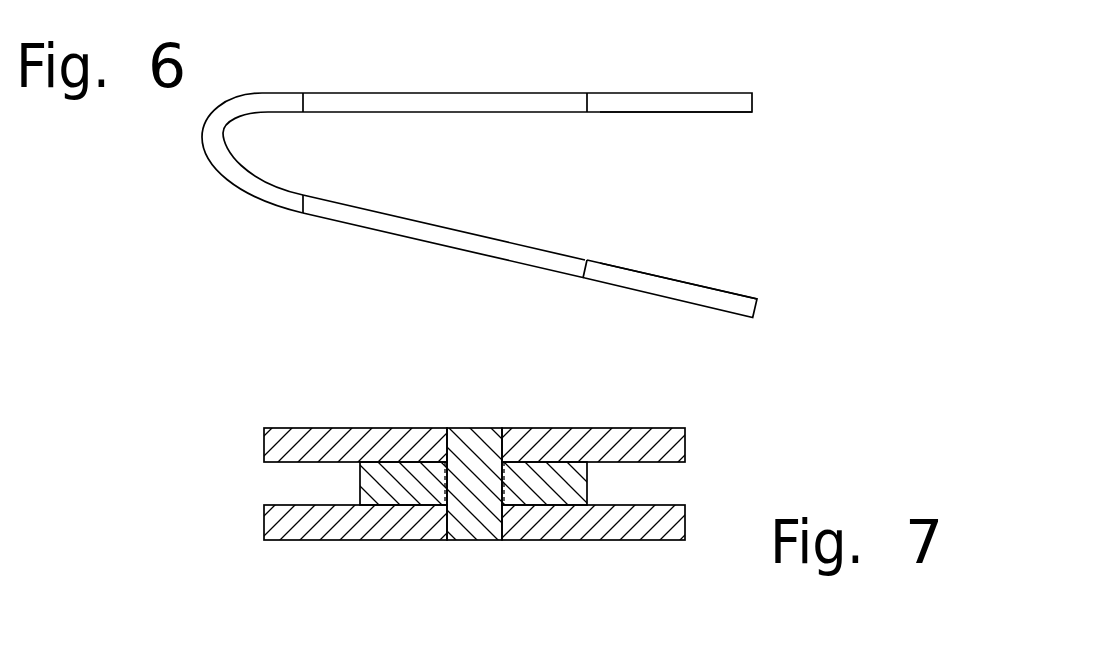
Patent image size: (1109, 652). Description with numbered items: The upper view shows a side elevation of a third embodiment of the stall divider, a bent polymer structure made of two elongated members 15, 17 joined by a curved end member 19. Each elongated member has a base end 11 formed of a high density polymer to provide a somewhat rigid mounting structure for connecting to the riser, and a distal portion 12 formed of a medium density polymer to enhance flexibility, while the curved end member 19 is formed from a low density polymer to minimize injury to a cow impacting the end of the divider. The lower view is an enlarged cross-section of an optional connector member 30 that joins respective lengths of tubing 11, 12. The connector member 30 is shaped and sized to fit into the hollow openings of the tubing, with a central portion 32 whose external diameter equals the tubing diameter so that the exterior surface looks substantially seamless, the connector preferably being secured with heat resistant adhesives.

In FIG. 6, the base end 11 is at (656, 93).
In FIG. 7, the base end 11 is at (555, 540).
In FIG. 6, the distal portion 12 is at (430, 93).
In FIG. 7, the distal portion 12 is at (372, 428).
In FIG. 6, the elongated member 15 is at (637, 113).
In FIG. 6, the elongated member 17 is at (638, 270).
In FIG. 6, the curved end member 19 is at (236, 184).
In FIG. 7, the connector member 30 is at (360, 486).
In FIG. 7, the central portion 32 is at (477, 428).